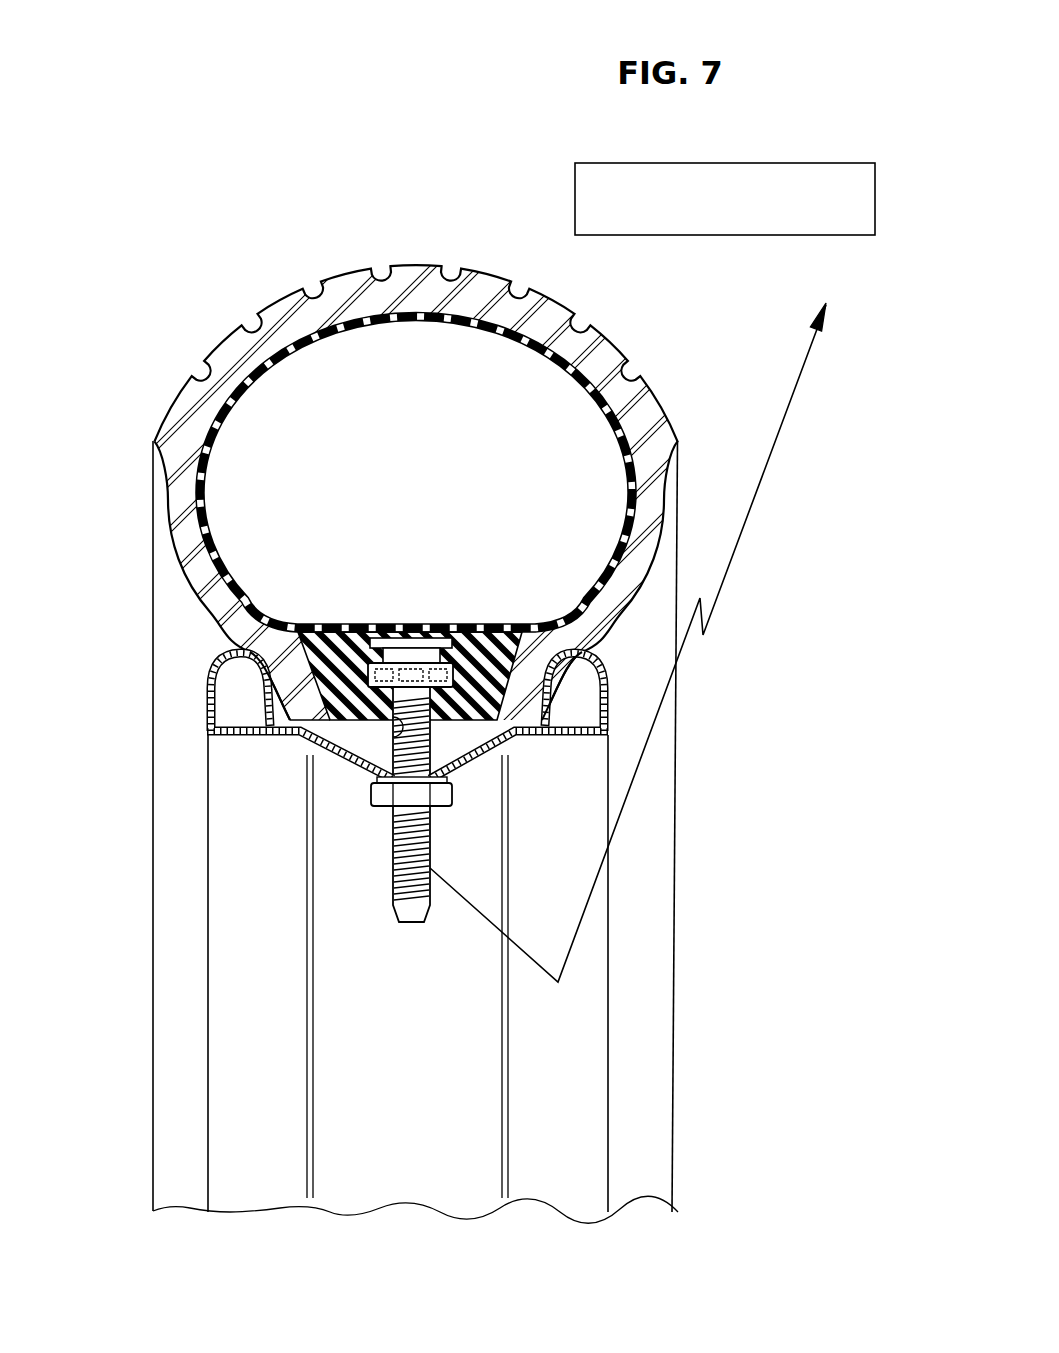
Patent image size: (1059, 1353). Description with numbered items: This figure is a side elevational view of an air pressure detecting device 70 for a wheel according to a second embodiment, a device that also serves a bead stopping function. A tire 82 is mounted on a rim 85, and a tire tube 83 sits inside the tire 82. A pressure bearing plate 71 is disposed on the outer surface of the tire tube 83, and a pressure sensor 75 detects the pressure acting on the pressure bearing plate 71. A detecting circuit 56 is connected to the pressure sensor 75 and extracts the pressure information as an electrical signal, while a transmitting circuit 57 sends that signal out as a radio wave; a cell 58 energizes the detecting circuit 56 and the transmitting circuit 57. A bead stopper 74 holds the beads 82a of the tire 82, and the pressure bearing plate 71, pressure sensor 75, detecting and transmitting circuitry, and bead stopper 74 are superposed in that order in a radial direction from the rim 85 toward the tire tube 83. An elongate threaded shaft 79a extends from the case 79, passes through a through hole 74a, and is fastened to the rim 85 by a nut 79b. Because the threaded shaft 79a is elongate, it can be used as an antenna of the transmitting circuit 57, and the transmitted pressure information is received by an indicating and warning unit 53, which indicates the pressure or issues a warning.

The air pressure detecting device 70 is at (185, 252).
The tire 82 is at (345, 270).
The tire tube 83 is at (243, 373).
The indicating and warning unit 53 is at (737, 235).
The pressure bearing plate 71 is at (360, 627).
The pressure sensor 75 is at (383, 645).
The detecting circuit 56 is at (408, 665).
The transmitting circuit 57 is at (440, 650).
The case 79 is at (495, 640).
The bead stopper 74 is at (515, 645).
The through hole 74a is at (395, 750).
The threaded shaft 79a is at (437, 832).
The nut 79b is at (453, 792).
The rim 85 is at (207, 695).
The beads 82a is at (300, 743).
The cell 58 is at (337, 728).